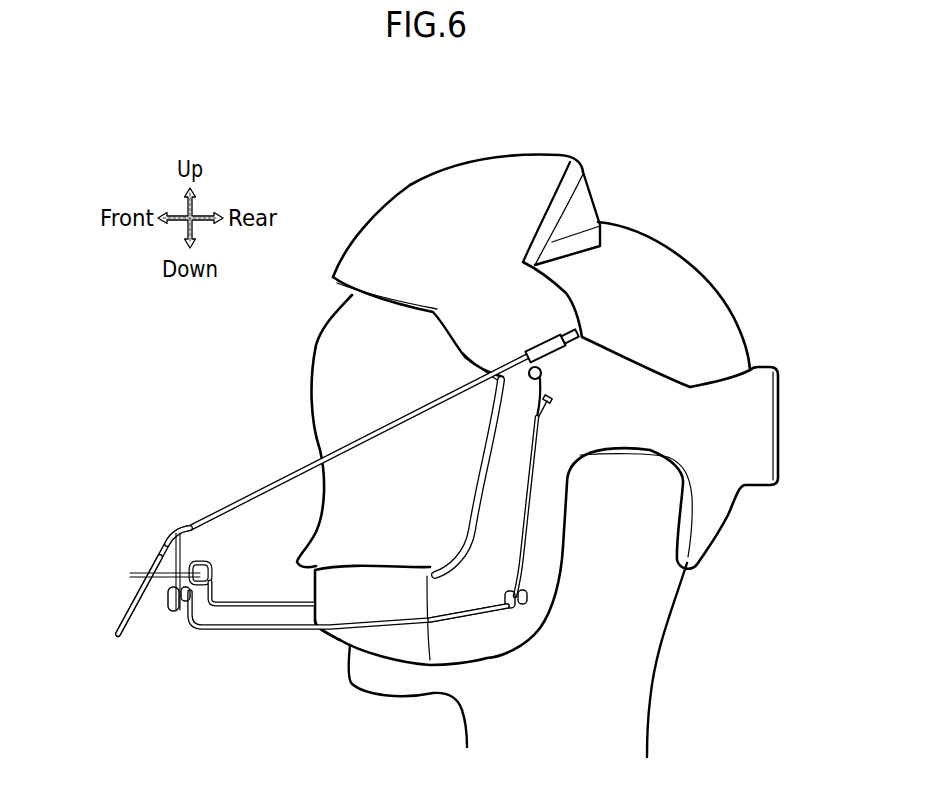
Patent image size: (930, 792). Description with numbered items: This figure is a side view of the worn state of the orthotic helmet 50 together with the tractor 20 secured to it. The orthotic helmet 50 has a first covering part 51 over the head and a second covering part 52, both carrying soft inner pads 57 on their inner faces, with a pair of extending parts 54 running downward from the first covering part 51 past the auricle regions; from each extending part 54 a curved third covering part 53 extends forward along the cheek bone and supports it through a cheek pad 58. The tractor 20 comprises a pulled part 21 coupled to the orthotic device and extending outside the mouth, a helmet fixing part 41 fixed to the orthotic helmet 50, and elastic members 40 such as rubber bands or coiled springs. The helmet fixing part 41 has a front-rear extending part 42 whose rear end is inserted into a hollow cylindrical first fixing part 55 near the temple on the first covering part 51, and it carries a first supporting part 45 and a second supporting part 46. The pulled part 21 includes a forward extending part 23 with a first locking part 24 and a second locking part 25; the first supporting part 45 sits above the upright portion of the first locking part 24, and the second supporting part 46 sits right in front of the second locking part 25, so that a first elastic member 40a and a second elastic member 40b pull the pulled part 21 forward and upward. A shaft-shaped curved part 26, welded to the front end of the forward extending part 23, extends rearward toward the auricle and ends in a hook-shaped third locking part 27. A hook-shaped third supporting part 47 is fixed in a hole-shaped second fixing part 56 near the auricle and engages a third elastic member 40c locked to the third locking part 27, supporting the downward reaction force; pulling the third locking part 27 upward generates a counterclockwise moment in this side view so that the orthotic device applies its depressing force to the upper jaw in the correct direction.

The tractor 20 is at (421, 452).
The pulled part 21 is at (153, 643).
The forward extending part 23 is at (284, 612).
The first locking part 24 is at (173, 612).
The second locking part 25 is at (223, 612).
The curved part 26 is at (334, 634).
The third locking part 27 is at (527, 612).
The elastic member 40 is at (421, 517).
The first elastic member 40a is at (177, 567).
The second elastic member 40b is at (194, 562).
The third elastic member 40c is at (527, 548).
The helmet fixing part 41 is at (307, 506).
The front-rear extending part 42 is at (391, 417).
The first supporting part 45 is at (172, 536).
The second supporting part 46 is at (160, 573).
The third supporting part 47 is at (547, 407).
The orthotic helmet 50 is at (490, 248).
The first covering part 51 is at (477, 263).
The second covering part 52 is at (747, 458).
The third covering part 53 is at (470, 663).
The extending part 54 is at (517, 508).
The first fixing part 55 is at (558, 323).
The second fixing part 56 is at (552, 372).
The inner pad 57 is at (589, 196).
The cheek pad 58 is at (410, 663).